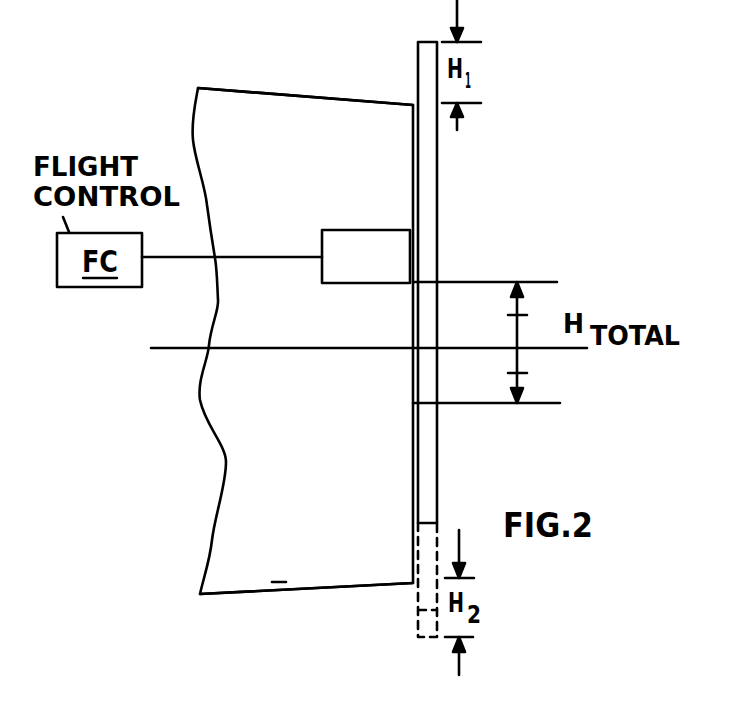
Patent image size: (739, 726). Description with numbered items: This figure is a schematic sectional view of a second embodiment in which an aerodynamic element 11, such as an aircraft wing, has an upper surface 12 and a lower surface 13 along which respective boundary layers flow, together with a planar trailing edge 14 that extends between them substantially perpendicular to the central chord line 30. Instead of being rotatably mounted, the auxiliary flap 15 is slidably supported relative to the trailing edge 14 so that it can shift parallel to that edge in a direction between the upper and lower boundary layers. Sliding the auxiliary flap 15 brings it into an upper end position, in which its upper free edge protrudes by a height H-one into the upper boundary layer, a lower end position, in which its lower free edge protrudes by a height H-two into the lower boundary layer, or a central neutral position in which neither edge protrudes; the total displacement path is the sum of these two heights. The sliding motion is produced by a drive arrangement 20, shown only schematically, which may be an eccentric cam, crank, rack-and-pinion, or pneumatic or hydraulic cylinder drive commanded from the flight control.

The aerodynamic element 11 is at (268, 561).
The upper surface 12 is at (300, 93).
The lower surface 13 is at (320, 592).
The planar trailing edge 14 is at (413, 536).
The auxiliary flap 15 is at (440, 244).
The drive arrangement 20 is at (384, 276).
The central chord line 30 is at (168, 350).